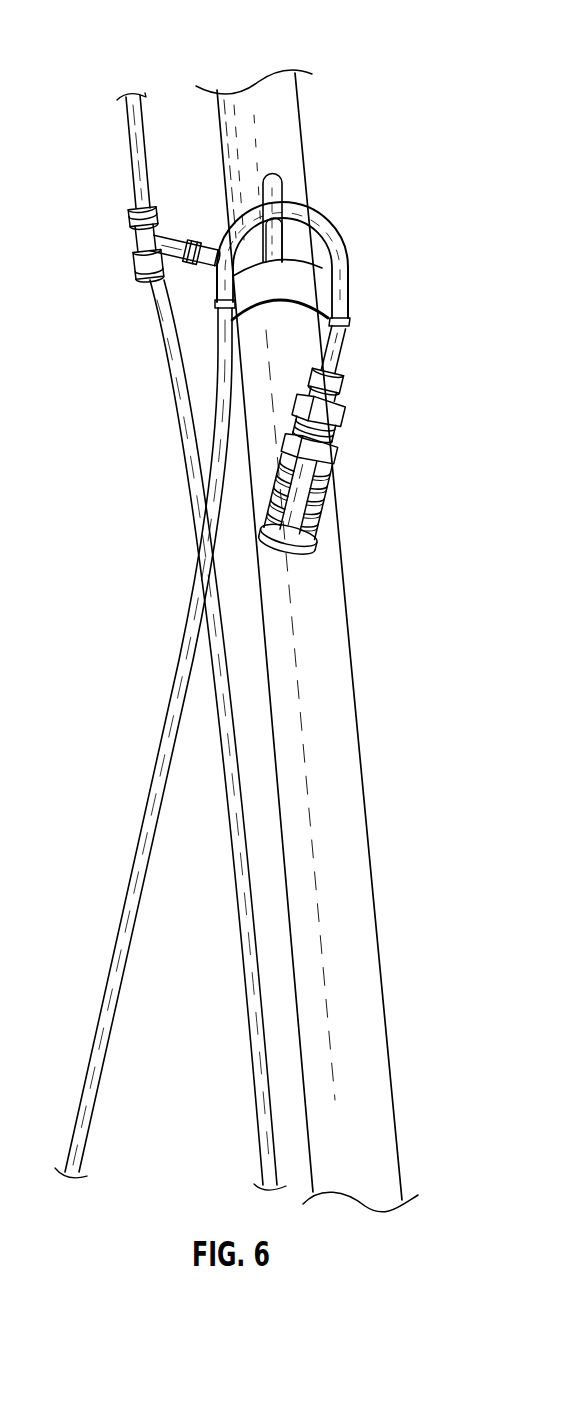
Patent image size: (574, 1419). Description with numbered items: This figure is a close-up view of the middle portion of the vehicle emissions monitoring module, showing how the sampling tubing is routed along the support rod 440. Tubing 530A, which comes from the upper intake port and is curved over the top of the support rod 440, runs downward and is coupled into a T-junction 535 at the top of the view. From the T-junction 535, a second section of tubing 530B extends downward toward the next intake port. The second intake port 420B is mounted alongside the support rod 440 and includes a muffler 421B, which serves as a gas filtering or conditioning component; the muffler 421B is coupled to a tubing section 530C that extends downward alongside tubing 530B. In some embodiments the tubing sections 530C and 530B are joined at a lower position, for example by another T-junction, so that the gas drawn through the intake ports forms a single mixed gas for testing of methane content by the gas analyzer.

The support rod 440 is at (349, 613).
The tubing 530A is at (129, 150).
The second section of tubing 530B is at (164, 330).
The tubing section 530C is at (340, 330).
The T-junction 535 is at (137, 245).
The second intake port 420B is at (343, 438).
The muffler 421B is at (325, 485).